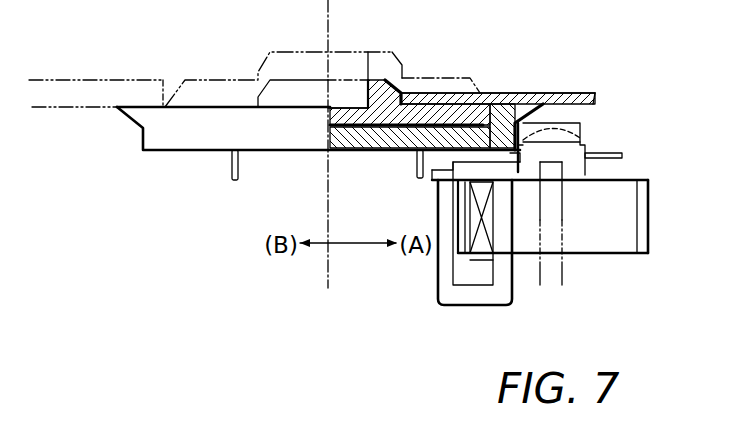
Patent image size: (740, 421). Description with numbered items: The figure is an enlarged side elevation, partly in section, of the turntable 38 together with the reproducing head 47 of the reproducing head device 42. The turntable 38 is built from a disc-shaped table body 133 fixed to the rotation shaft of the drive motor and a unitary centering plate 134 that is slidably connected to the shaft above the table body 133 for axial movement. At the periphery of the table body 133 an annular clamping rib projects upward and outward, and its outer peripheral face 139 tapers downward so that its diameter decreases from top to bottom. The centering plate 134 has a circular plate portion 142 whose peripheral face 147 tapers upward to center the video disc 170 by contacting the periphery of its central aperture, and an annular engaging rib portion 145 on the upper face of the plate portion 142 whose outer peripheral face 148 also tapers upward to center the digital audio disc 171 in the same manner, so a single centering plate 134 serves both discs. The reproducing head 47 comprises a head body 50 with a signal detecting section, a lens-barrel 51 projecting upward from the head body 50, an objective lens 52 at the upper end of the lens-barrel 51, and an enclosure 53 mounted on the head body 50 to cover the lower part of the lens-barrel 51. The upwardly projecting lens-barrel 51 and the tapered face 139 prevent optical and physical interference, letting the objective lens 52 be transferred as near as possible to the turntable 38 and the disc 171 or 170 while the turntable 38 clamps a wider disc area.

The turntable 38 is at (213, 160).
The reproducing head device 42 is at (573, 225).
The reproducing head 47 is at (618, 179).
The head body 50 is at (648, 245).
The lens-barrel 51 is at (555, 122).
The objective lens 52 is at (596, 101).
The enclosure 53 is at (607, 153).
The table body 133 is at (472, 116).
The centering plate 134 is at (211, 85).
The outer peripheral face 139 is at (552, 110).
The circular plate portion 142 is at (356, 115).
The annular engaging rib portion 145 is at (383, 88).
The peripheral face 147 is at (493, 113).
The outer peripheral face 148 is at (400, 86).
The information carrier disc 170 is at (93, 80).
The information carrier disc 171 is at (438, 92).